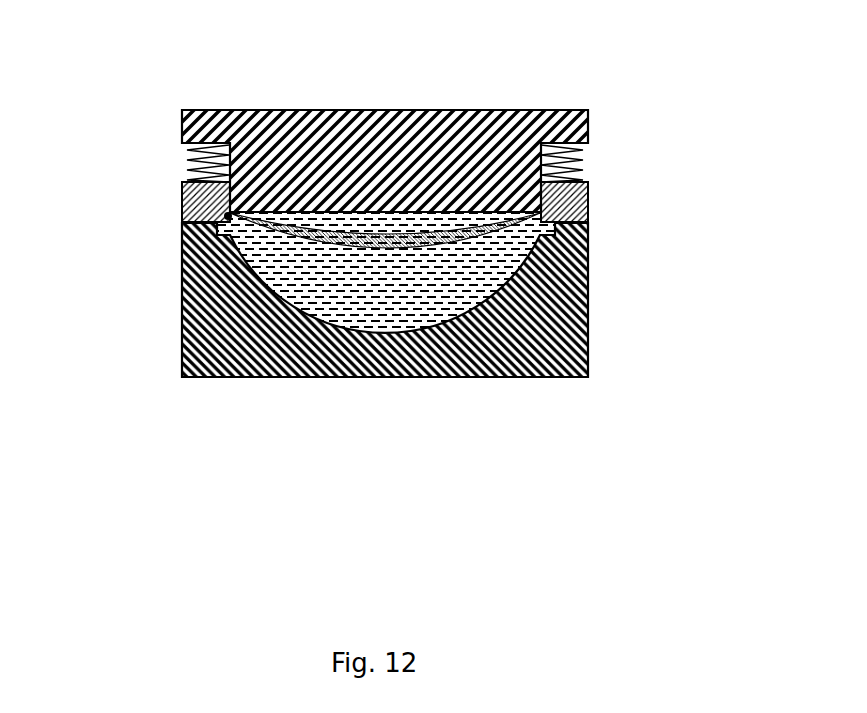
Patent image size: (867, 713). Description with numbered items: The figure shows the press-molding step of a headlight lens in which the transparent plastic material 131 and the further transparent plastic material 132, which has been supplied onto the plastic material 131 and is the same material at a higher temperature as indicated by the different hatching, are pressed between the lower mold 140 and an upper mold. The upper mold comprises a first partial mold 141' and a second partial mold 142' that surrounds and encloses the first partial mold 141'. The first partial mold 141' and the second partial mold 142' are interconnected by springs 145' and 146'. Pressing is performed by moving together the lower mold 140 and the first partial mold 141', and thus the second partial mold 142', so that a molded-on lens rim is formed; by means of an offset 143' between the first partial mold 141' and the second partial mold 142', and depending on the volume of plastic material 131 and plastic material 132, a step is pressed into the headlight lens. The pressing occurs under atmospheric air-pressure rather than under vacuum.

The first partial mold 141' is at (385, 115).
The spring 146' is at (144, 163).
The spring 145' is at (622, 160).
The second partial mold 142' is at (377, 198).
The offset 143' is at (151, 257).
The lower mold 140 is at (217, 320).
The further transparent plastic material 132 is at (430, 226).
The liquid transparent plastic material 131 is at (428, 300).